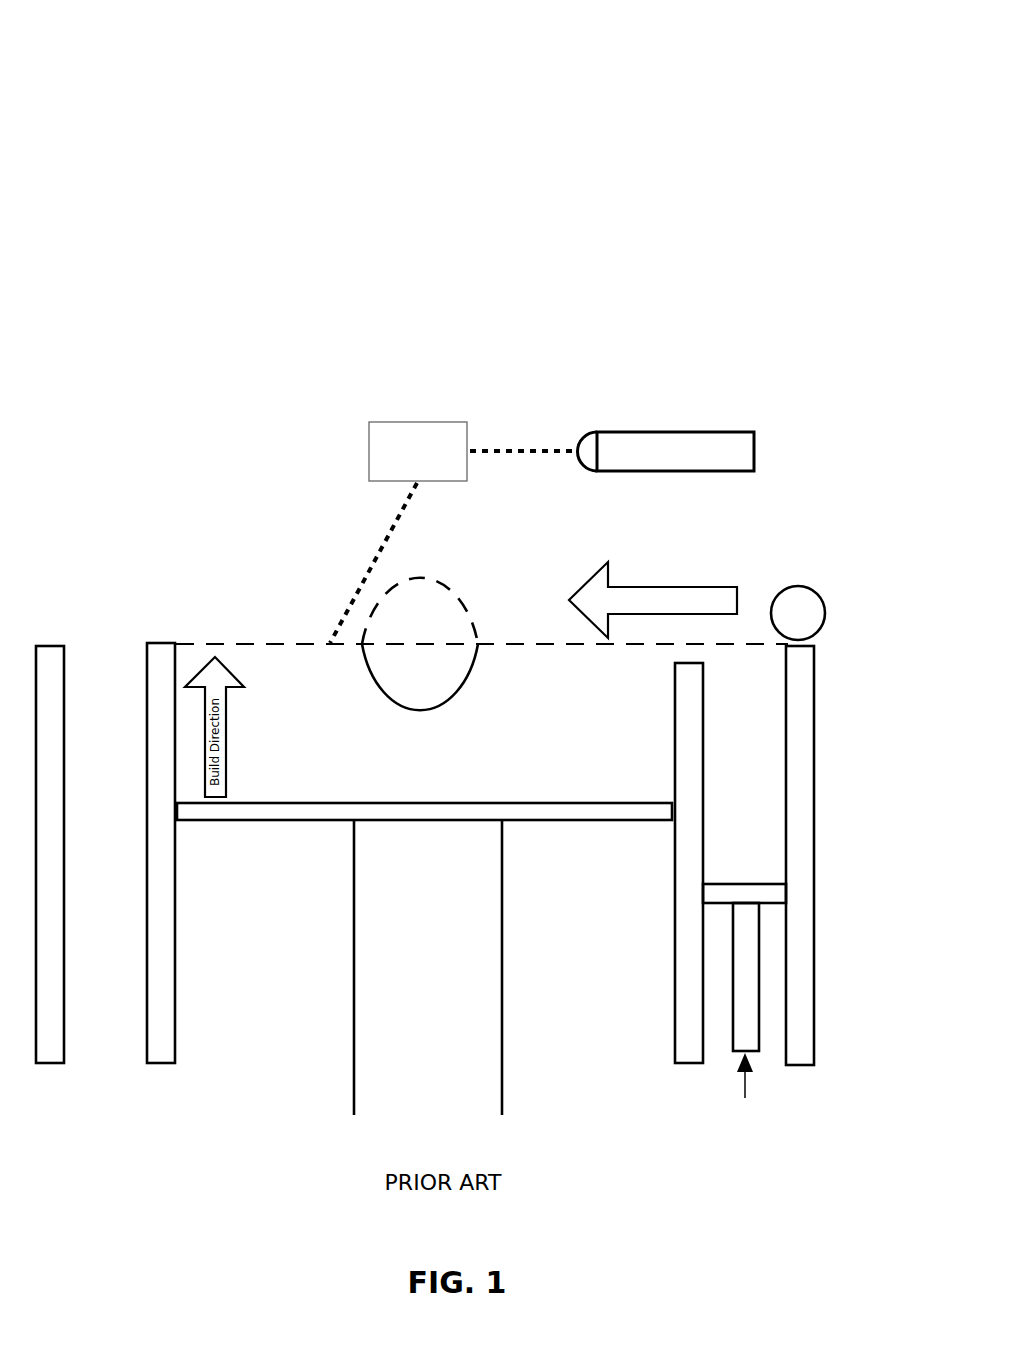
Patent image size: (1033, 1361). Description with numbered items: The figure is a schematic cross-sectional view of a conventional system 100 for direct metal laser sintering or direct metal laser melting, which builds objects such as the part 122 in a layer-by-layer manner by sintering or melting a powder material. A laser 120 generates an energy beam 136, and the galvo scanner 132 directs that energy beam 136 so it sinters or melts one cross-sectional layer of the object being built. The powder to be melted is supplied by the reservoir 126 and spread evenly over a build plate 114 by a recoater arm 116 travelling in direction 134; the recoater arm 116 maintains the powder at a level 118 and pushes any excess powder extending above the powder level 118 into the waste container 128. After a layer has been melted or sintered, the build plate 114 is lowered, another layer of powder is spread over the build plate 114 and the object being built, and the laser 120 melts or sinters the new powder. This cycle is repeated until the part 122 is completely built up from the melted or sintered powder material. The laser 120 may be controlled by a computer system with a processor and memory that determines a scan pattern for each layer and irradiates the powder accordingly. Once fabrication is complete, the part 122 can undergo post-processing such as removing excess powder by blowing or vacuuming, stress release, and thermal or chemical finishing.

The conventional system 100 is at (118, 56).
The build plate 114 is at (623, 802).
The recoater arm 116 is at (794, 587).
The powder level 118 is at (238, 643).
The laser 120 is at (625, 432).
The part 122 is at (360, 714).
The reservoir 126 is at (750, 740).
The waste container 128 is at (128, 963).
The galvo scanner 132 is at (418, 422).
The direction 134 is at (588, 582).
The energy beam 136 is at (372, 560).